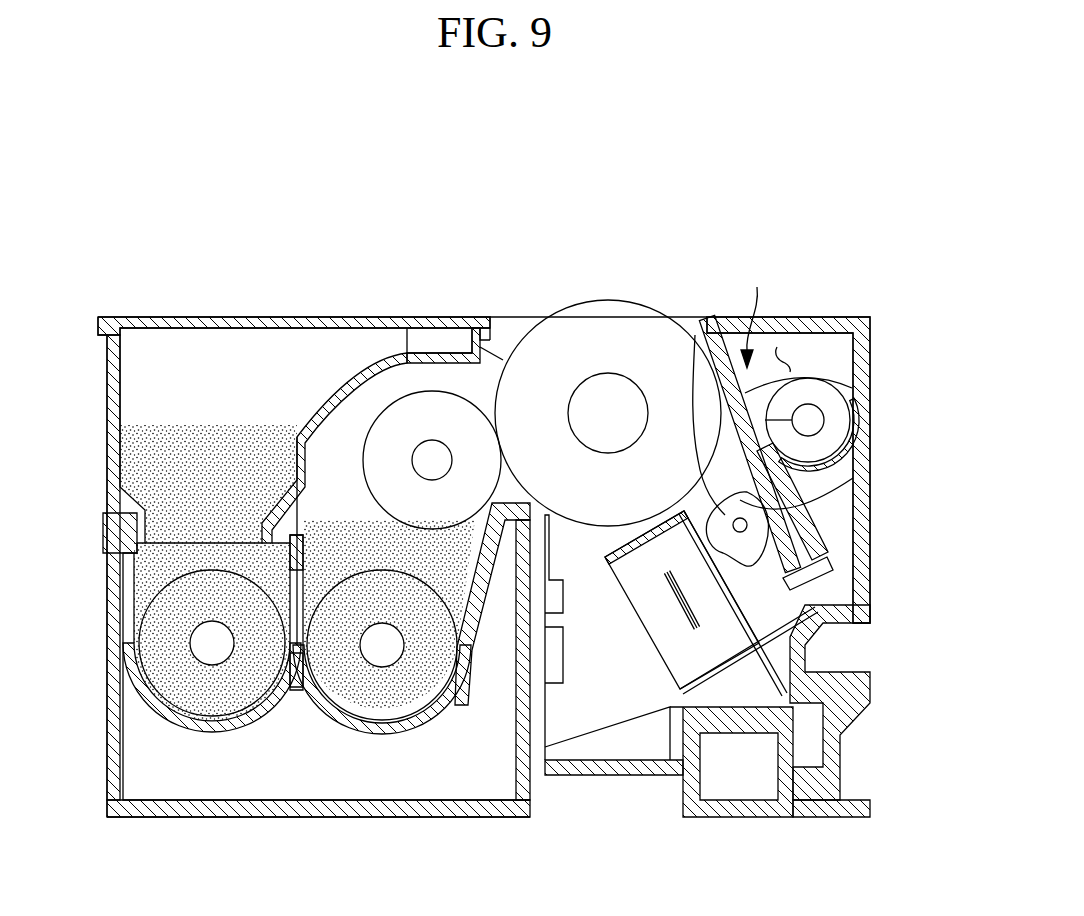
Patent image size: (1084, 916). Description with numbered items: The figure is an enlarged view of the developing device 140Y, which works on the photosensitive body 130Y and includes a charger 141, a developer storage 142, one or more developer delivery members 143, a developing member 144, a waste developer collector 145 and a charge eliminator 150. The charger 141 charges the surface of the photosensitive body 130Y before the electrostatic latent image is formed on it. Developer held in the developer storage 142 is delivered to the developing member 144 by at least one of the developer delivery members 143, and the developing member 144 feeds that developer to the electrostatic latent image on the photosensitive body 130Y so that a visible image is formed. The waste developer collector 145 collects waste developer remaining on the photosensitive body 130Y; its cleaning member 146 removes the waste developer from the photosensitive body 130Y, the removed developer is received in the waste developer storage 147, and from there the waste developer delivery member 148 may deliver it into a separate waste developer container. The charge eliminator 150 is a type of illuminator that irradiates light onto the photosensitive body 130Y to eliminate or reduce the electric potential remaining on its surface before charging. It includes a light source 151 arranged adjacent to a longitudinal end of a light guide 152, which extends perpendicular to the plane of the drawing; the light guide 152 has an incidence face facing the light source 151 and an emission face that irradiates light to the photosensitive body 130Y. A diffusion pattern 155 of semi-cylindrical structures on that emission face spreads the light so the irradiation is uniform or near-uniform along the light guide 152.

The developing device 140Y is at (109, 305).
The photosensitive body 130Y is at (593, 317).
The charger 141 is at (743, 598).
The developer storage 142 is at (297, 650).
The developer delivery members 143 is at (213, 697).
The developing member 144 is at (415, 400).
The waste developer collector 145 is at (757, 312).
The cleaning member 146 is at (815, 390).
The waste developer storage 147 is at (792, 362).
The waste developer delivery member 148 is at (832, 433).
The charge eliminator 150 is at (763, 520).
The light source 151 is at (830, 562).
The light guide 152 is at (840, 476).
The diffusion pattern 155 is at (705, 322).